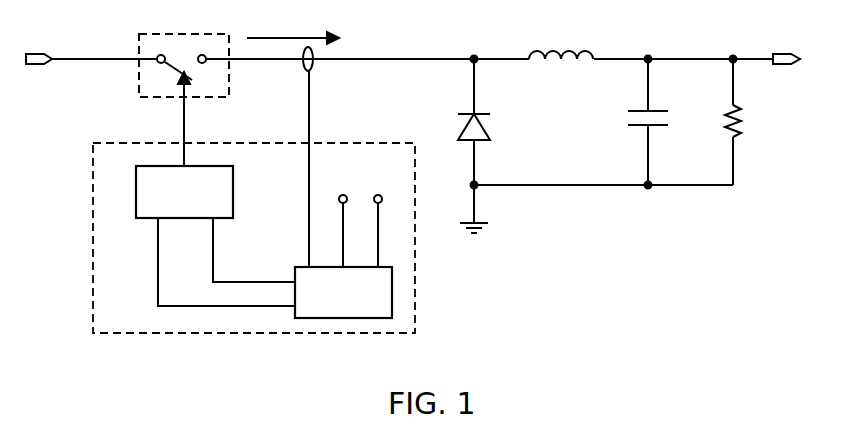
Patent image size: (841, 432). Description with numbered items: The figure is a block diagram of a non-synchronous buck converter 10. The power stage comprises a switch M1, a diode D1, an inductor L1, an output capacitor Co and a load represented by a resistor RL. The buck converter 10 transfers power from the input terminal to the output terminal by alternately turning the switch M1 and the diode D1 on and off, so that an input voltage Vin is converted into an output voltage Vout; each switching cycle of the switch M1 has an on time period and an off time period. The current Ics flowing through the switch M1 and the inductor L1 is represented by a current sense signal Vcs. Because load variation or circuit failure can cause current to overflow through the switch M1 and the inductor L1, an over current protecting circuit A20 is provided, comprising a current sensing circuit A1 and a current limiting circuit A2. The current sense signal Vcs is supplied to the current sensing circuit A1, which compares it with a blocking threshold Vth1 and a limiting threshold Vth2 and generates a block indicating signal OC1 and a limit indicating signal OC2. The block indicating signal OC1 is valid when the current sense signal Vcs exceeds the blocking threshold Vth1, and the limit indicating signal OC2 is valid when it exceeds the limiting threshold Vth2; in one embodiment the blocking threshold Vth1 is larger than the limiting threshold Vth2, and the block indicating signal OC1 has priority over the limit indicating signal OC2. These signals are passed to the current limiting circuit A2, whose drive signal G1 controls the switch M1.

The buck converter 10 is at (761, 297).
The switch M1 is at (184, 53).
The gate drive signal G1 is at (198, 119).
The input voltage Vin is at (41, 44).
The output voltage Vout is at (784, 43).
The sensed current Ics is at (293, 43).
The current sense signal Vcs is at (291, 169).
The diode D1 is at (499, 145).
The inductor L1 is at (561, 40).
The output capacitor Co is at (663, 122).
The resistor RL is at (748, 121).
The over current protecting circuit A20 is at (254, 238).
The current limiting circuit A2 is at (184, 192).
The current sensing circuit A1 is at (343, 292).
The block indicating signal OC1 is at (254, 250).
The limit indicating signal OC2 is at (201, 262).
The blocking threshold Vth1 is at (335, 221).
The limiting threshold Vth2 is at (384, 221).